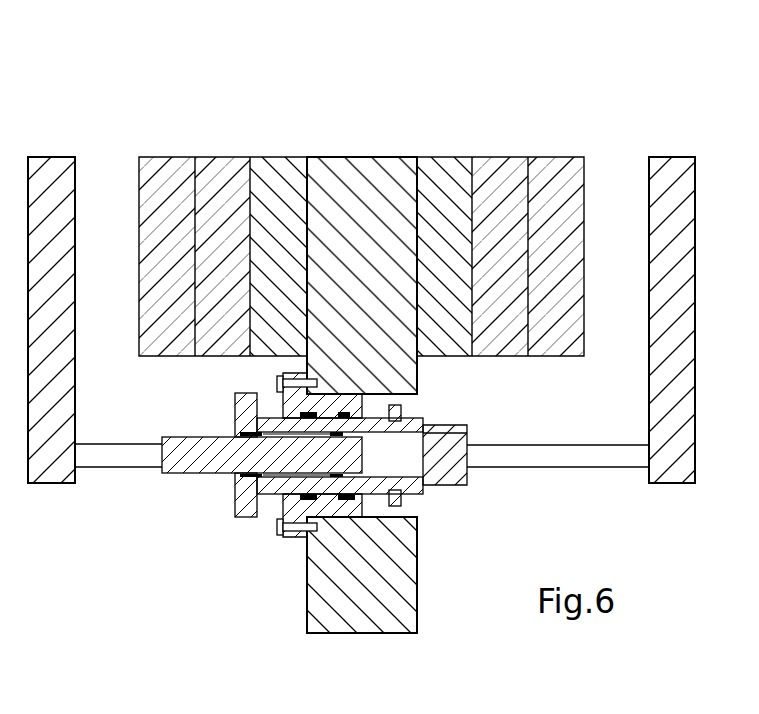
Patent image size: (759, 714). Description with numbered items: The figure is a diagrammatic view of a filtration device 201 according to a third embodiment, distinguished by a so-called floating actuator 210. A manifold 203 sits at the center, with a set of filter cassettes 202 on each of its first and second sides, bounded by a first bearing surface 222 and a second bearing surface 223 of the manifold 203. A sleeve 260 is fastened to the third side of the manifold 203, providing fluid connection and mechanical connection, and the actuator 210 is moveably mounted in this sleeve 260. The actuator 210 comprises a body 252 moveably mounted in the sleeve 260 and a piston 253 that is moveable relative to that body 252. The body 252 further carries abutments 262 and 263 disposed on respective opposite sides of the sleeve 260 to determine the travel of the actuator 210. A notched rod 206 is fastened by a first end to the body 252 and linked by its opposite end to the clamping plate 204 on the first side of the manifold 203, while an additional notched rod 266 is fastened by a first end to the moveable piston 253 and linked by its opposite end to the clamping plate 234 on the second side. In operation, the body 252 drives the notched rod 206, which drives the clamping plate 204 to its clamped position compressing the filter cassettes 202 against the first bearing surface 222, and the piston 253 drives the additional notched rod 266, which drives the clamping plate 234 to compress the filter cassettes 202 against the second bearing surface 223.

The filtration device 201 is at (392, 92).
The filter cassettes 202 is at (220, 167).
The manifold 203 is at (340, 177).
The clamping plate 204 is at (667, 170).
The clamping plate 234 is at (50, 168).
The second bearing surface 223 is at (242, 207).
The first bearing surface 222 is at (485, 207).
The notched rod 206 is at (543, 462).
The additional notched rod 266 is at (110, 462).
The piston 253 is at (190, 437).
The body 252 is at (448, 484).
The floating actuator 210 is at (235, 530).
The abutment 263 is at (248, 398).
The sleeve 260 is at (300, 540).
The abutment 262 is at (402, 412).